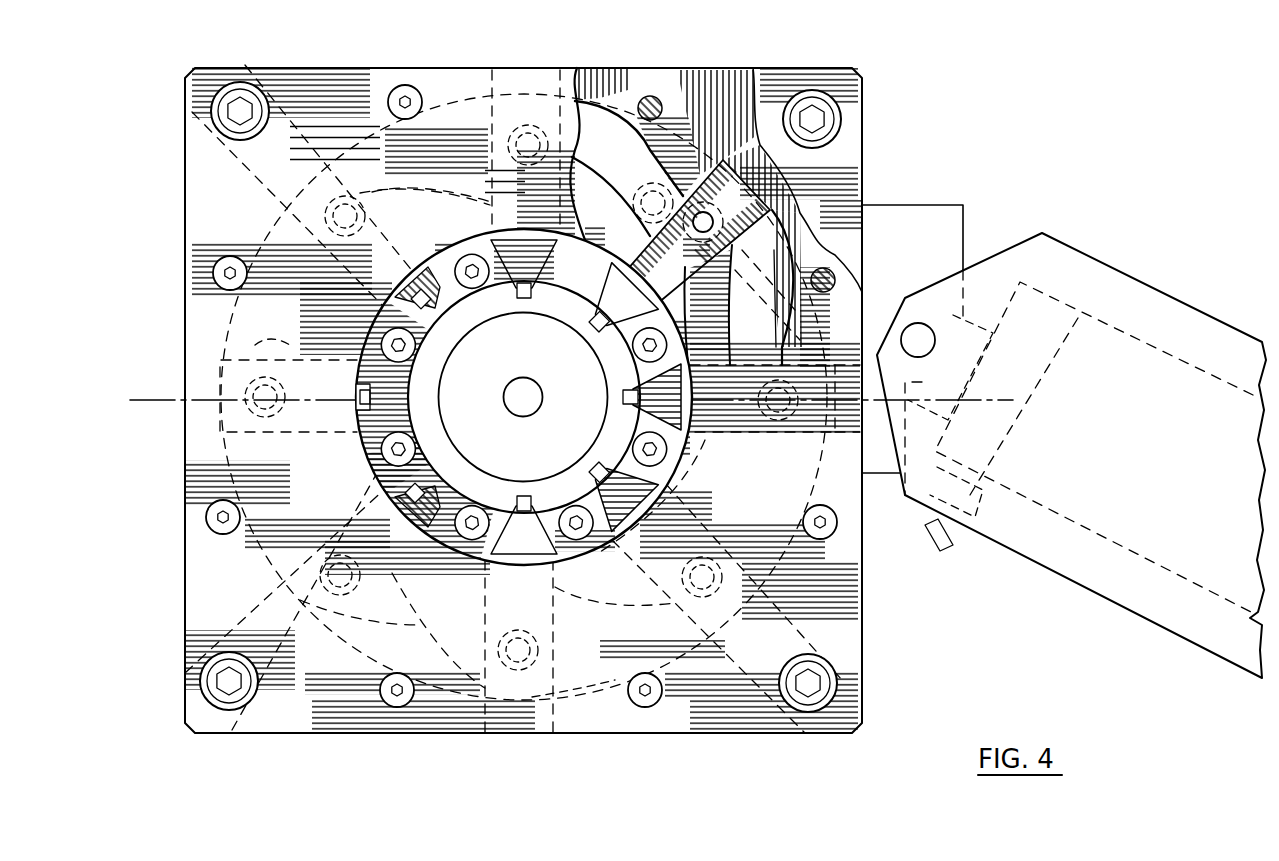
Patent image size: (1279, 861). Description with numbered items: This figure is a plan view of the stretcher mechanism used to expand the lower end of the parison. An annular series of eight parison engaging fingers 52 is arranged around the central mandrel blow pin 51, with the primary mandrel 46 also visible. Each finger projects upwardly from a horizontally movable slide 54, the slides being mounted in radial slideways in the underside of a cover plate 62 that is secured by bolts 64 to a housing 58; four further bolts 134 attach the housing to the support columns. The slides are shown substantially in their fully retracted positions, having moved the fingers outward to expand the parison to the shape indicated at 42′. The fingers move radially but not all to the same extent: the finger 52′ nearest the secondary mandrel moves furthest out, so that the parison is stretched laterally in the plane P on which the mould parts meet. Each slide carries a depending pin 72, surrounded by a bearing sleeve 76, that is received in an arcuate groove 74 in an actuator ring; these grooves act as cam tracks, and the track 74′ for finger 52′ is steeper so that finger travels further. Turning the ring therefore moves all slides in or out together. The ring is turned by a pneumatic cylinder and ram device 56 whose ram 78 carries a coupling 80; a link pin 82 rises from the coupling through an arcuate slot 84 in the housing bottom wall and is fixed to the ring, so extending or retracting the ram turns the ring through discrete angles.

The expanded shape of the parison 42′ is at (493, 292).
The primary mandrel 46 is at (438, 422).
The mandrel blow pin 51 is at (532, 402).
The parison engaging fingers 52 is at (620, 393).
The finger closest to the secondary mandrel 52′ is at (357, 397).
The slide 54 is at (656, 289).
The pneumatic cylinder and ram device 56 is at (1142, 333).
The housing 58 is at (731, 90).
The cover plate 62 is at (848, 630).
The bolts 64 is at (421, 95).
The pin 72 is at (703, 232).
The arcuate groove (cam track) 74 is at (695, 316).
The cam track for finger 52′ 74′ is at (612, 692).
The bearing sleeve 76 is at (524, 665).
The ram 78 is at (882, 312).
The coupling 80 is at (700, 278).
The link pin 82 is at (630, 194).
The arcuate slot 84 is at (652, 190).
The bolts 134 is at (258, 120).
The plane on which the mould parts meet P is at (985, 395).